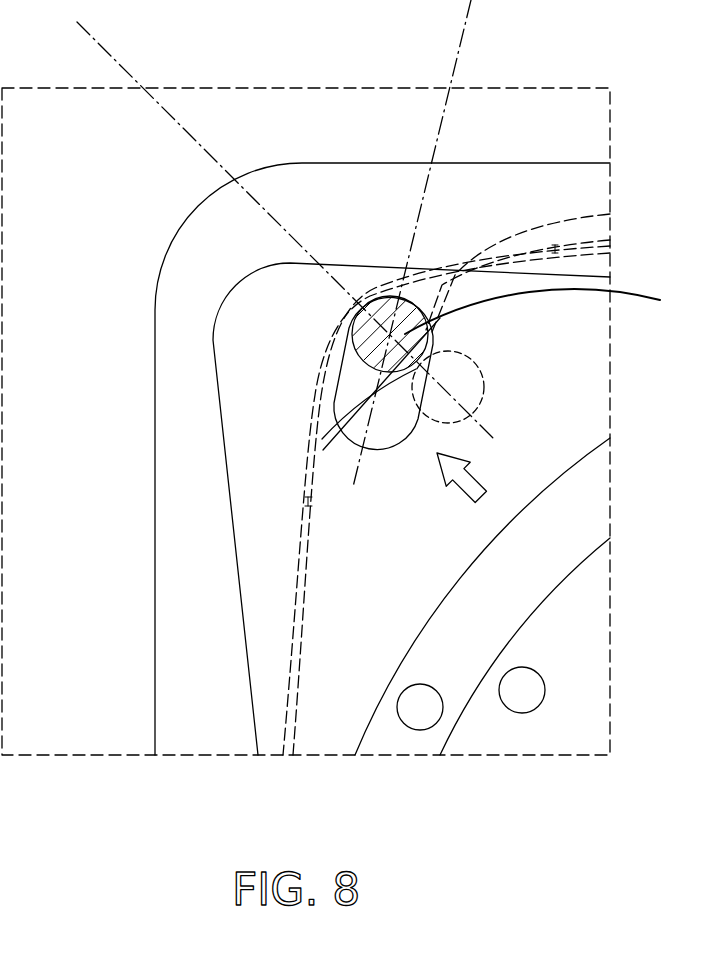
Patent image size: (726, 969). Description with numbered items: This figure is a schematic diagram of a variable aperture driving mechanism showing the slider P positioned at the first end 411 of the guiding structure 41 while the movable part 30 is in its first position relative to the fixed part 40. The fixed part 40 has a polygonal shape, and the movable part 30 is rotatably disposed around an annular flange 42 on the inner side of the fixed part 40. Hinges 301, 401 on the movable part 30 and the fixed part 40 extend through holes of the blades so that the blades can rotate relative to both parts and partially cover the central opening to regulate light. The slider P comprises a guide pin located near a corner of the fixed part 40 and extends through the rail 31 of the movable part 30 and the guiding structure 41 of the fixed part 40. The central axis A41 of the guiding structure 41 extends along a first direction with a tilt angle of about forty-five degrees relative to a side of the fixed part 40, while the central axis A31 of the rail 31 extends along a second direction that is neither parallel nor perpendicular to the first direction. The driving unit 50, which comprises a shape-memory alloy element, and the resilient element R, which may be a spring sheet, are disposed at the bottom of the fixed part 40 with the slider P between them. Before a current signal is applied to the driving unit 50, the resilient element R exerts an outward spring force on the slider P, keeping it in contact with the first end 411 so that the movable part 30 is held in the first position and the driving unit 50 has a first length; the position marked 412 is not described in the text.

The movable part 30 is at (224, 507).
The rail 31 is at (340, 383).
The hinge 301 is at (420, 717).
The fixed part 40 is at (146, 436).
The guiding structure 41 is at (473, 357).
The first end 411 is at (377, 292).
The pin position (phantom) 412 is at (477, 400).
The annular flange 42 is at (528, 577).
The hinge 401 is at (525, 700).
The driving unit 50 is at (610, 214).
The slider P is at (543, 310).
The resilient element R is at (440, 316).
The central axis of the rail A31 is at (465, 25).
The central axis of the guiding structure A41 is at (98, 43).